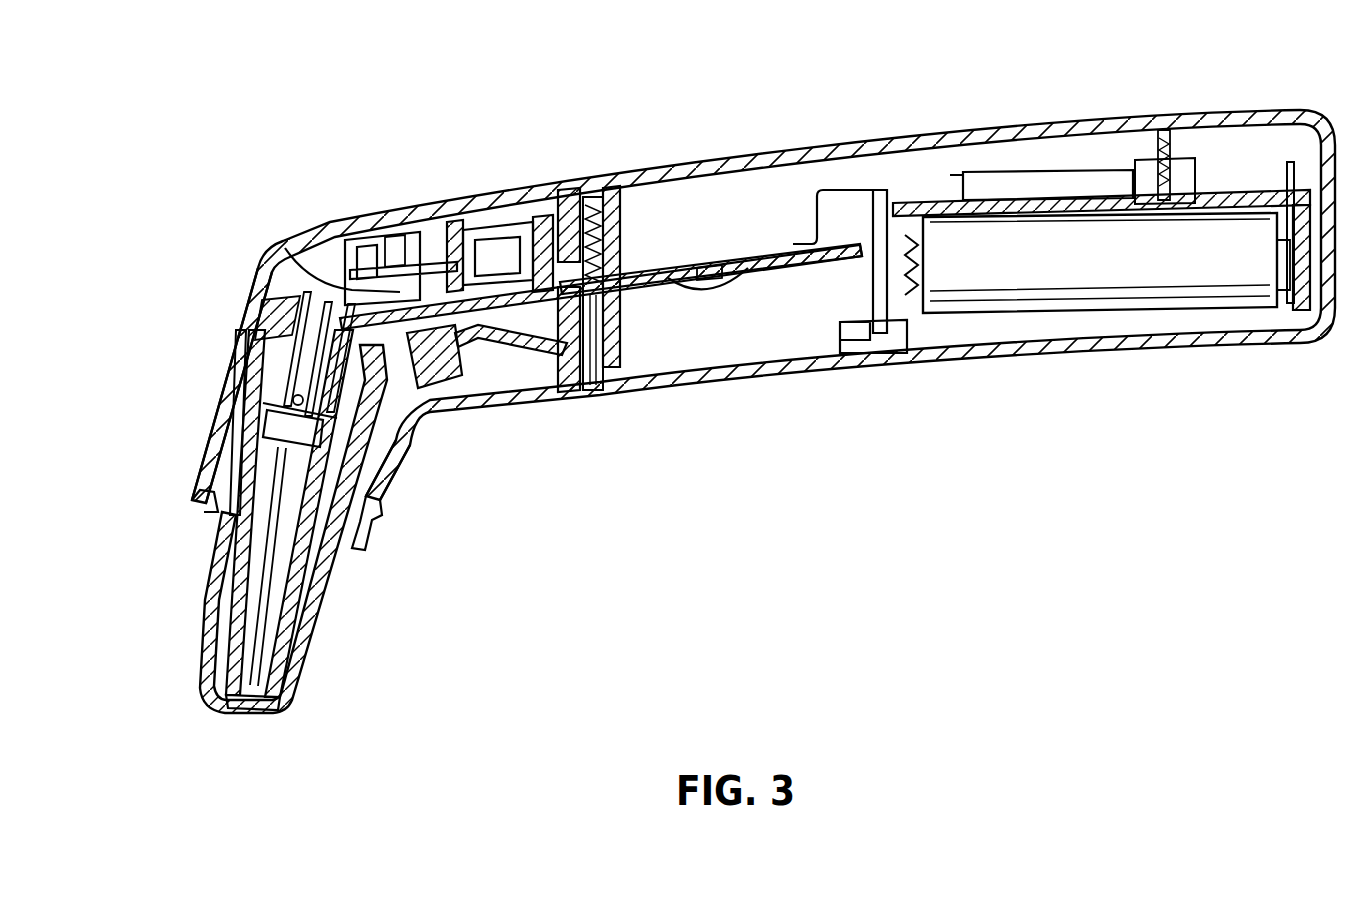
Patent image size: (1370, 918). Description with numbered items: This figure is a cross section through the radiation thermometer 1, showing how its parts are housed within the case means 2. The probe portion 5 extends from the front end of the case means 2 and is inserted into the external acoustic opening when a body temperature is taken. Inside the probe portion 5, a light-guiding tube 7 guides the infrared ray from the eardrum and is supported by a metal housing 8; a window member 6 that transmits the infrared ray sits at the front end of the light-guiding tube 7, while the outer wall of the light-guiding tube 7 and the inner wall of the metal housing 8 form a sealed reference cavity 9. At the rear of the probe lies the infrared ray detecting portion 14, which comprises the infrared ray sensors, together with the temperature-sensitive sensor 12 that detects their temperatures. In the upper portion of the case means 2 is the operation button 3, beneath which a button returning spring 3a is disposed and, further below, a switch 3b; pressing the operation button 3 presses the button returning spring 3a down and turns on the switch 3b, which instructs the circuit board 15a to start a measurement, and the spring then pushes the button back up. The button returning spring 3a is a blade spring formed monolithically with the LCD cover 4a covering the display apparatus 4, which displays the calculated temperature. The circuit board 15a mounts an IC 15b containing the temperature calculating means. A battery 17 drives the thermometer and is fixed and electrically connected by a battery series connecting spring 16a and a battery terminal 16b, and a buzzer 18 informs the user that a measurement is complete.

The radiation thermometer 1 is at (842, 133).
The case means 2 is at (232, 380).
The operation button 3 is at (383, 205).
The button returning spring 3a is at (287, 252).
The switch 3b is at (417, 313).
The display apparatus 4 is at (507, 235).
The LCD cover 4a is at (452, 222).
The probe portion 5 is at (203, 645).
The window member 6 is at (240, 708).
The light-guiding tube 7 is at (275, 640).
The metal housing 8 is at (232, 600).
The reference cavity 9 is at (265, 482).
The temperature-sensitive sensor 12 is at (395, 470).
The infrared ray detecting portion 14 is at (380, 512).
The circuit board 15a is at (647, 266).
The IC 15b is at (720, 292).
The battery series connecting spring 16a is at (1290, 310).
The battery terminal 16b is at (907, 300).
The battery 17 is at (1087, 294).
The buzzer 18 is at (1068, 172).